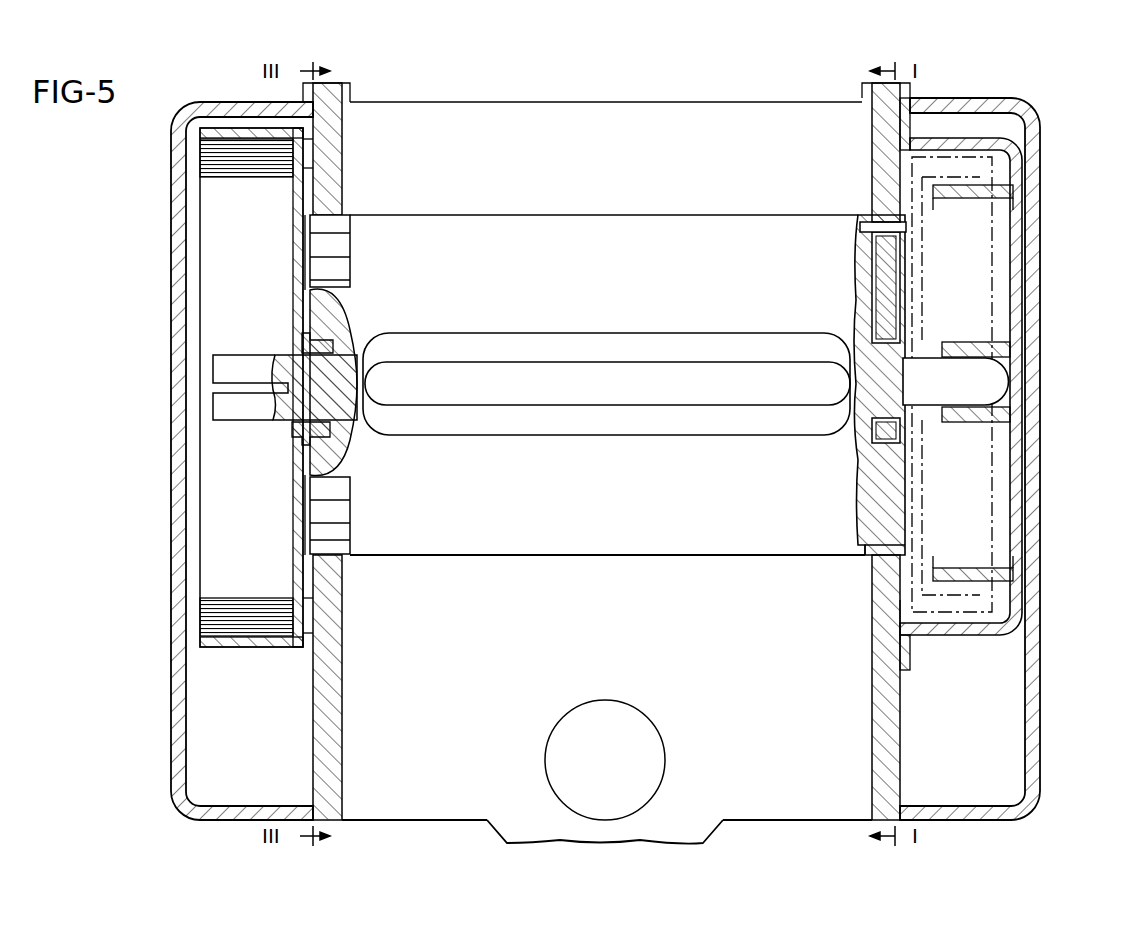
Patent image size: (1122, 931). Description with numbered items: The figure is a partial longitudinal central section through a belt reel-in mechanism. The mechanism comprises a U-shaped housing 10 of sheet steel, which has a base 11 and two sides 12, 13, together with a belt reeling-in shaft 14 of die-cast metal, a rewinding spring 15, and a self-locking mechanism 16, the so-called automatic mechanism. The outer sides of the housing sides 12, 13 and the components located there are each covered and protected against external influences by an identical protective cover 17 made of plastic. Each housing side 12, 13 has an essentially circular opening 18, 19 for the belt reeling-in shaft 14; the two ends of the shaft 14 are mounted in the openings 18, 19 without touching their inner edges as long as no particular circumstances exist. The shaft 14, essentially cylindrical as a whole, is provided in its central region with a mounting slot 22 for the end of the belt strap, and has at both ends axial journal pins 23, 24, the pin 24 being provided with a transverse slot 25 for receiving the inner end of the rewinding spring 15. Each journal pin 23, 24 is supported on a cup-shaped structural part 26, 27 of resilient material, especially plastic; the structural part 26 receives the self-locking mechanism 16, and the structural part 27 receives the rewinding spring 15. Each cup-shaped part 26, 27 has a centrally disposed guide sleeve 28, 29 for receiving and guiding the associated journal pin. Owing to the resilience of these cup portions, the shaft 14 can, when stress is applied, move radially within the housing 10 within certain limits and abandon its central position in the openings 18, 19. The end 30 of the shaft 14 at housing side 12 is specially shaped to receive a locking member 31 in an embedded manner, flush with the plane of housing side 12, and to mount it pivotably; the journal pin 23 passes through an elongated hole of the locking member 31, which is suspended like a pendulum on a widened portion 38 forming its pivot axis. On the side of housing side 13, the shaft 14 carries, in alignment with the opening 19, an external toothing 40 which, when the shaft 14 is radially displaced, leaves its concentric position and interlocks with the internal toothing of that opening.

The housing 10 is at (432, 824).
The base 11 is at (758, 812).
The housing side 12 is at (876, 122).
The housing side 13 is at (336, 708).
The belt reeling-in shaft 14 is at (740, 542).
The rewinding spring 15 is at (230, 612).
The self-locking mechanism 16 is at (972, 491).
The protective cover 17 is at (182, 805).
The opening 18 is at (882, 560).
The opening 19 is at (330, 208).
The mounting slot 22 is at (585, 425).
The journal pin 23 is at (990, 380).
The journal pin 24 is at (290, 362).
The transverse slot 25 is at (240, 386).
The cup-shaped structural part 26 is at (1022, 283).
The cup-shaped structural part 27 is at (298, 283).
The guide sleeve 28 is at (1015, 348).
The guide sleeve 29 is at (300, 430).
The shaft end 30 is at (900, 517).
The locking member 31 is at (882, 268).
The widened portion 38 is at (880, 250).
The external toothing 40 is at (340, 495).